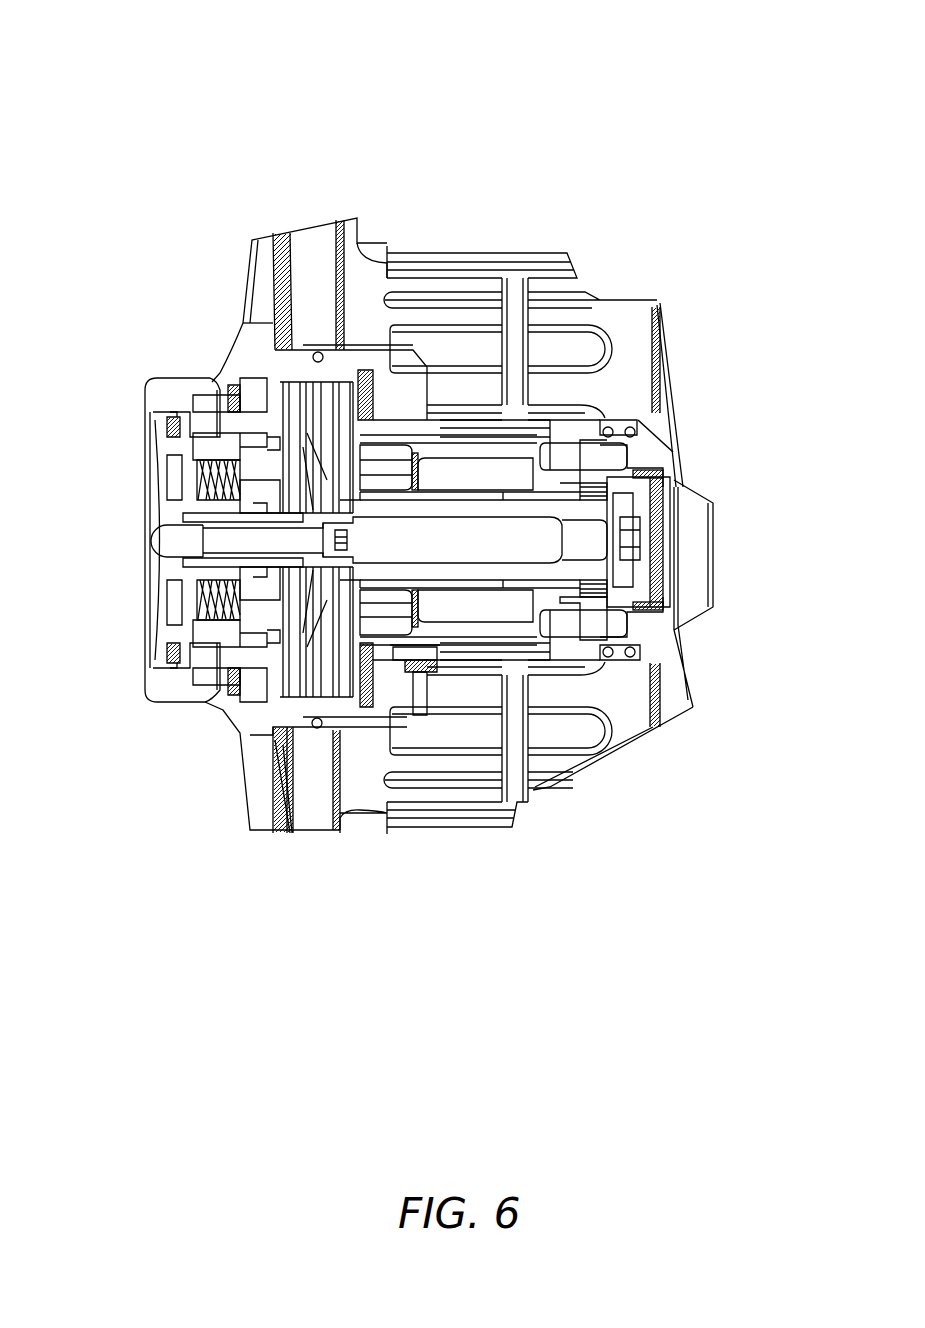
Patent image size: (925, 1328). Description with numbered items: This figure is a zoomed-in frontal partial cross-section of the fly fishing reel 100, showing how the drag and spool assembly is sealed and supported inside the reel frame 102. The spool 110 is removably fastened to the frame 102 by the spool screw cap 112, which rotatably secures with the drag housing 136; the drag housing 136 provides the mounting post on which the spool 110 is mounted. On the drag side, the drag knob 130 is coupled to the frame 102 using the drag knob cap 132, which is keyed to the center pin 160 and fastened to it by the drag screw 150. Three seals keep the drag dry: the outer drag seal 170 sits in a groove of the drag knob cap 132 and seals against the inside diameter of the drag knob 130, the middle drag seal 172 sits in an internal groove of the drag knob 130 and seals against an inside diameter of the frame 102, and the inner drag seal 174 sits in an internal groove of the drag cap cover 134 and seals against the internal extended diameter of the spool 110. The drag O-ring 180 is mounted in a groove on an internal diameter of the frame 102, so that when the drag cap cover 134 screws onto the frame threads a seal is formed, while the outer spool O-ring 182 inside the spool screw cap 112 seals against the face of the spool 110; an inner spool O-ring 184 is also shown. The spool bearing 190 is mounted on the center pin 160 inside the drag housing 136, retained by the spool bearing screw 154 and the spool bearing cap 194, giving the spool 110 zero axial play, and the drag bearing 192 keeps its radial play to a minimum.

The fly fishing reel 100 is at (140, 44).
The reel frame 102 is at (262, 345).
The spool 110 is at (513, 273).
The spool screw cap 112 is at (650, 450).
The drag knob 130 is at (173, 683).
The drag knob cap 132 is at (173, 570).
The drag cap cover 134 is at (415, 700).
The drag housing 136 is at (480, 633).
The drag screw 150 is at (230, 540).
The spool bearing screw 154 is at (607, 538).
The center pin 160 is at (625, 628).
The outer drag seal 170 is at (173, 653).
The middle drag seal 172 is at (212, 382).
The inner drag seal 174 is at (367, 625).
The drag O-ring 180 is at (327, 712).
The outer spool O-ring 182 is at (665, 370).
The inner spool O-ring 184 is at (608, 427).
The spool bearing 190 is at (640, 587).
The drag bearing 192 is at (322, 680).
The spool bearing cap 194 is at (683, 473).